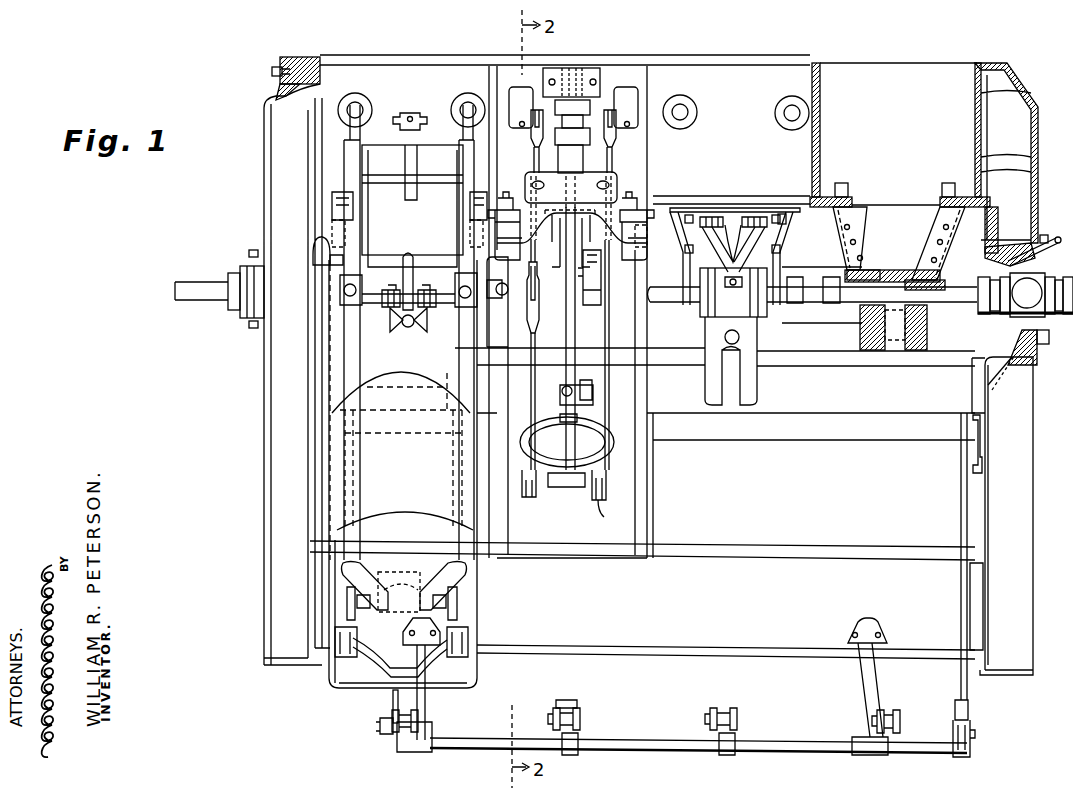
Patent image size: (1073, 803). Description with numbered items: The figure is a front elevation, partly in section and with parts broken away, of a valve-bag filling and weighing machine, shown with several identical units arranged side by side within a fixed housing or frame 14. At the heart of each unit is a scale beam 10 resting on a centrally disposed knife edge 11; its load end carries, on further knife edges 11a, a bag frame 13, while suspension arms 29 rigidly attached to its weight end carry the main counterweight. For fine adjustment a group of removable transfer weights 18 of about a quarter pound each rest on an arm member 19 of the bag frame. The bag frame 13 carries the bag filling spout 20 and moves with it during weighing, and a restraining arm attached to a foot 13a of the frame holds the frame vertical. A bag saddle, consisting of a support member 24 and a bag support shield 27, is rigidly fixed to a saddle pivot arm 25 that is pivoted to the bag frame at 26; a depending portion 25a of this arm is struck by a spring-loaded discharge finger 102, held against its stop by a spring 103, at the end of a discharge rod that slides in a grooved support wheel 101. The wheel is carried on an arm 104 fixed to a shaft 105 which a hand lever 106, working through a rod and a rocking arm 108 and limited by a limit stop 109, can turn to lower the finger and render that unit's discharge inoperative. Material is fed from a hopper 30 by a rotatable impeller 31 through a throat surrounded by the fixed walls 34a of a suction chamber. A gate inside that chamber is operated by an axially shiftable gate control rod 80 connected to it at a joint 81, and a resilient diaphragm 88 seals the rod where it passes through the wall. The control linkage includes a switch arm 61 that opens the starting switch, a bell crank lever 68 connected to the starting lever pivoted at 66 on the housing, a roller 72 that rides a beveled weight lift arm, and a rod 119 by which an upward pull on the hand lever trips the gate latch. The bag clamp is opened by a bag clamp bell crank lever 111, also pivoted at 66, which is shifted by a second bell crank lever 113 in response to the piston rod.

The scale beam 10 is at (332, 237).
The knife edge 11 is at (505, 198).
The knife edges 11a is at (332, 214).
The bag frame 13 is at (330, 353).
The foot of the bag frame 13a is at (390, 667).
The housing or frame 14 is at (1023, 435).
The removable transfer weights 18 is at (361, 104).
The arm member 19 is at (367, 107).
The bag filling spout 20 is at (408, 312).
The support member 24 is at (376, 597).
The saddle pivot arm 25 is at (329, 598).
The depending portion of the saddle support arm 25a is at (350, 690).
The pivot 26 is at (335, 633).
The bag support shield 27 is at (367, 387).
The suspension arms 29 is at (343, 567).
The hopper 30 is at (902, 140).
The rotatable impeller 31 is at (923, 268).
The fixed walls 34a is at (792, 362).
The switch arm 61 is at (533, 157).
The pivot 66 is at (786, 222).
The bell crank lever 68 is at (527, 298).
The roller 72 is at (585, 383).
The gate control rod 80 is at (560, 418).
The joint 81 is at (562, 390).
The resilient diaphragm 88 is at (600, 430).
The grooved support wheel 101 is at (560, 708).
The discharge finger 102 is at (393, 694).
The spring 103 is at (380, 725).
The arm 104 is at (417, 723).
The shaft 105 is at (637, 739).
The hand lever 106 is at (977, 463).
The rocking arm 108 is at (970, 728).
The limit stop 109 is at (962, 515).
The bag clamp bell crank lever 111 is at (733, 336).
The second bell crank lever 113 is at (603, 284).
The rod 119 is at (535, 380).